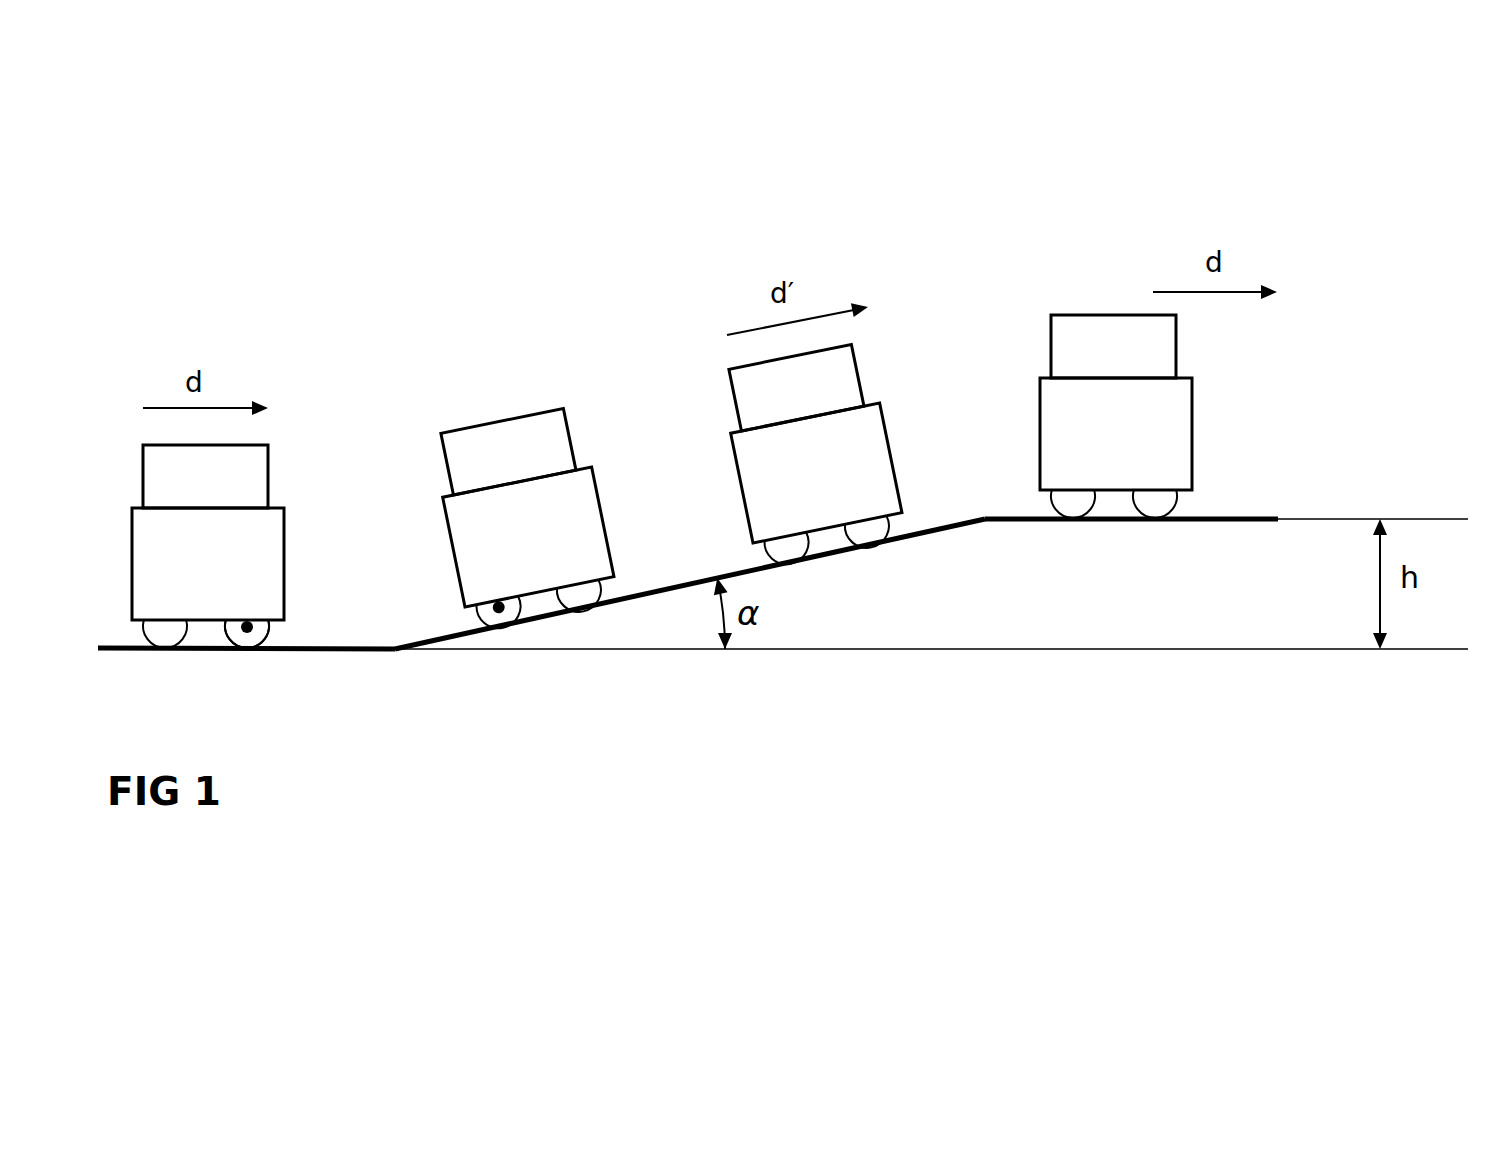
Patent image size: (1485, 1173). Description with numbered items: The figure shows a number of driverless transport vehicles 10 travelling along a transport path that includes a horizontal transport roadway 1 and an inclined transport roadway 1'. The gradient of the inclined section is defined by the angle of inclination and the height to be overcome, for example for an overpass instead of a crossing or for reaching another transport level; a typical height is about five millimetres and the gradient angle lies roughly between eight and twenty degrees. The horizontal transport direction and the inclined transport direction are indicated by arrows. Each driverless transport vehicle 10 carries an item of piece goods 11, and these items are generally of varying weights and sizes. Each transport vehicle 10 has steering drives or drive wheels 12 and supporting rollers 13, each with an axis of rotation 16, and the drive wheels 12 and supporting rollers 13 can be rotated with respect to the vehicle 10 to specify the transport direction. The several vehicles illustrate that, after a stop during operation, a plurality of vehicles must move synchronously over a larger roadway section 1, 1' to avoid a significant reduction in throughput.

The horizontal transport roadway 1 is at (783, 505).
The inclined transport roadway 1' is at (690, 513).
The driverless transport vehicle 10 is at (603, 497).
The piece goods 11 is at (482, 423).
The drive wheel 12 is at (225, 653).
The supporting roller 13 is at (157, 650).
The axis of rotation 16 is at (247, 627).